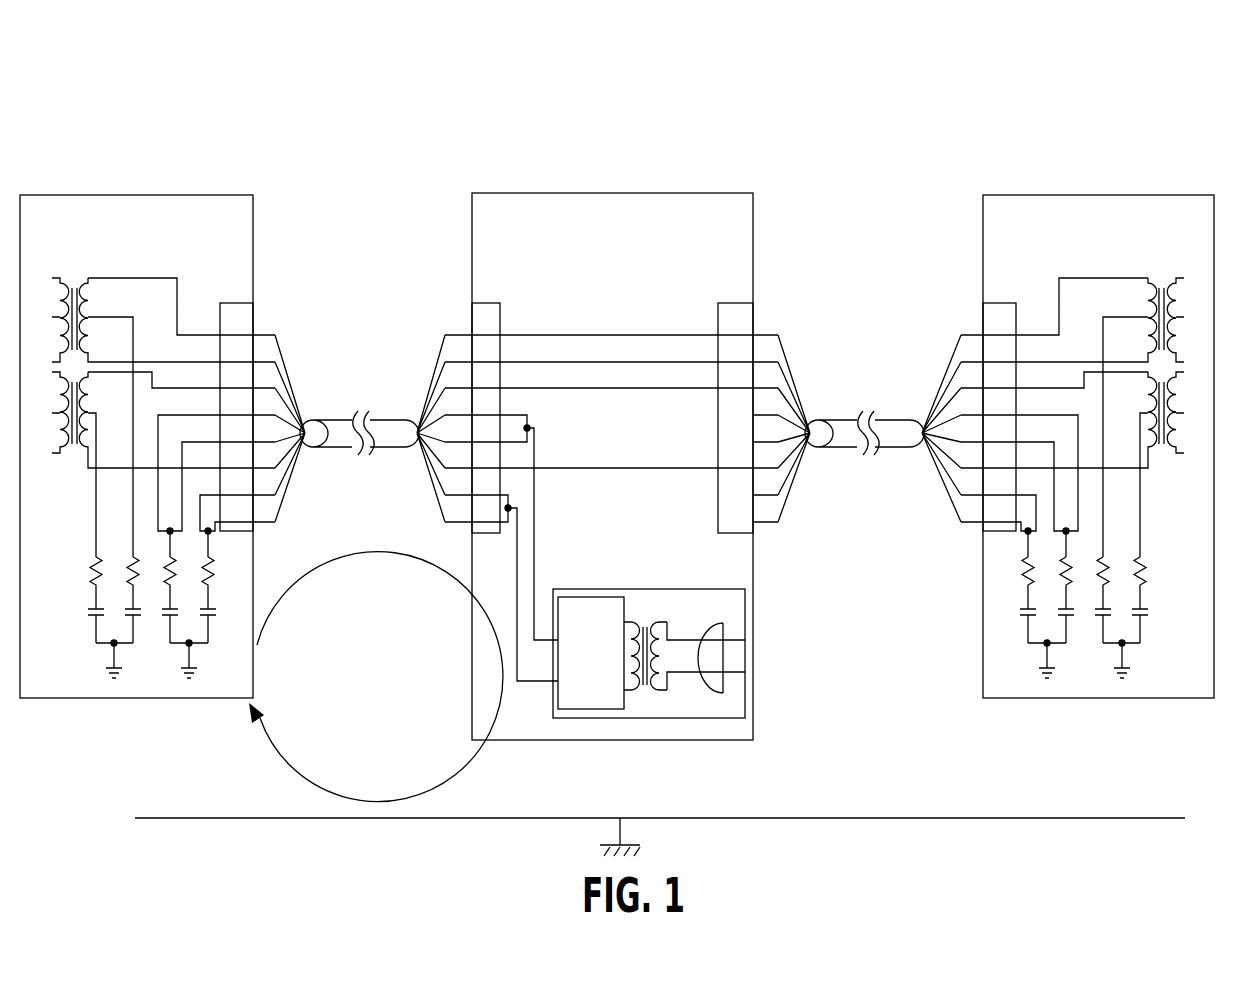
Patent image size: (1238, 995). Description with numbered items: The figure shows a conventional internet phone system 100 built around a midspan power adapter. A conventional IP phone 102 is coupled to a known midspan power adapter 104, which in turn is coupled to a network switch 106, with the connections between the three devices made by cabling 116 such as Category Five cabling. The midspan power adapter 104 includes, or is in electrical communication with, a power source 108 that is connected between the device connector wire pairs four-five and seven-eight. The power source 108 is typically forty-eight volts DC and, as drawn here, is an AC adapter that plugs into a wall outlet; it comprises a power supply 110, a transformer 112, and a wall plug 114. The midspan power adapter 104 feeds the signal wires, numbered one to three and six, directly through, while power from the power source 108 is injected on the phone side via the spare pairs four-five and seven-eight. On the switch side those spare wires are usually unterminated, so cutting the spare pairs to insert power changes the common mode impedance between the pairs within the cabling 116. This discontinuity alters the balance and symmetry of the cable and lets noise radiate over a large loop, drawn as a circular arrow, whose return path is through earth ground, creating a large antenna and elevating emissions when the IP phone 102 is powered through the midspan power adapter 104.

The system 100 is at (727, 120).
The IP phone 102 is at (240, 195).
The midspan power adapter 104 is at (703, 195).
The network switch 106 is at (1013, 195).
The power source 108 is at (745, 720).
The power supply 110 is at (612, 690).
The transformer 112 is at (645, 622).
The wall plug 114 is at (704, 640).
The cabling 116 is at (392, 420).